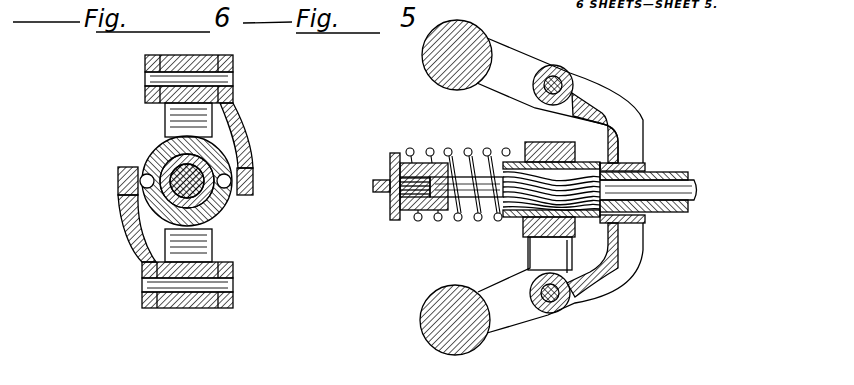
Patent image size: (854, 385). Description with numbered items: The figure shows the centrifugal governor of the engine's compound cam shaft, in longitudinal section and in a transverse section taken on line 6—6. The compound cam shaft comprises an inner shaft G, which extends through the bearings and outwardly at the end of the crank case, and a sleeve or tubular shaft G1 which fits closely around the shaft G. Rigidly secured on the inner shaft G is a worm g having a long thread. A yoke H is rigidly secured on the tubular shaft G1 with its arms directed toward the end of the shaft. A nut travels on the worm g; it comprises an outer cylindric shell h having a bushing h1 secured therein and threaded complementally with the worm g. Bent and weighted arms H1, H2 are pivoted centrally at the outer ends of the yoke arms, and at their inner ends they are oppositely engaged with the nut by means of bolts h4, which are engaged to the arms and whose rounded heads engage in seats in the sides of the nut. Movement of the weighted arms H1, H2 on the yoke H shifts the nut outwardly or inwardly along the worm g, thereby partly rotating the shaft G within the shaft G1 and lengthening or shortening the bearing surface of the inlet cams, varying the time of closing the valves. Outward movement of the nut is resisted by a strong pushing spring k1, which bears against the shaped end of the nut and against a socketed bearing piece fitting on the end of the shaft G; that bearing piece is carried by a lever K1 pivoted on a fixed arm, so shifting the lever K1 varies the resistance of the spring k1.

In FIG. 6, the yoke H is at (165, 125).
In FIG. 5, the yoke H is at (617, 128).
In FIG. 5, the weighted arm H1 is at (508, 318).
In FIG. 5, the weighted arm H2 is at (510, 62).
In FIG. 6, the inner shaft G is at (150, 163).
In FIG. 5, the inner shaft G is at (692, 187).
In FIG. 5, the tubular shaft G1 is at (688, 221).
In FIG. 5, the worm g is at (535, 188).
In FIG. 6, the outer cylindric shell h is at (232, 190).
In FIG. 5, the outer cylindric shell h is at (528, 144).
In FIG. 6, the bushing h1 is at (165, 207).
In FIG. 6, the bolts h4 is at (278, 178).
In FIG. 5, the pushing spring k1 is at (376, 240).
In FIG. 5, the lever K1 is at (388, 181).
In FIG. 5, the section line 6— 6 is at (552, 365).